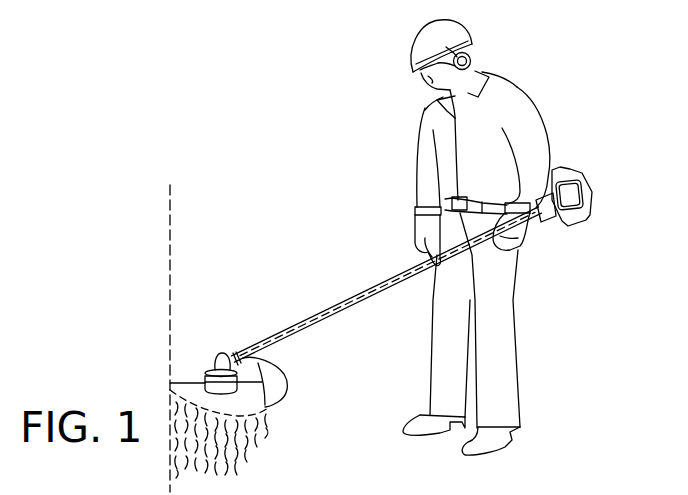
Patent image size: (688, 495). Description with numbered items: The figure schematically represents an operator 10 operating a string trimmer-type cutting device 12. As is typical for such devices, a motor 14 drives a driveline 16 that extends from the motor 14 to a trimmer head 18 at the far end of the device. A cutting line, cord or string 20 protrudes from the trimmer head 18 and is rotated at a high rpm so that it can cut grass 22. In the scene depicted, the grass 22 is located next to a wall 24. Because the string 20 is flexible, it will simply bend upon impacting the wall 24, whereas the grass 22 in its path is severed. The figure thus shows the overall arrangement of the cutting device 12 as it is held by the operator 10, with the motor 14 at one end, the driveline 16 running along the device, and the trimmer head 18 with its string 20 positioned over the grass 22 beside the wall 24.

The operator 10 is at (520, 83).
The string trimmer-type cutting device 12 is at (296, 325).
The motor 14 is at (587, 184).
The driveline 16 is at (393, 280).
The trimmer head 18 is at (221, 352).
The cutting line, cord or string 20 is at (188, 382).
The grass 22 is at (240, 436).
The wall 24 is at (173, 247).